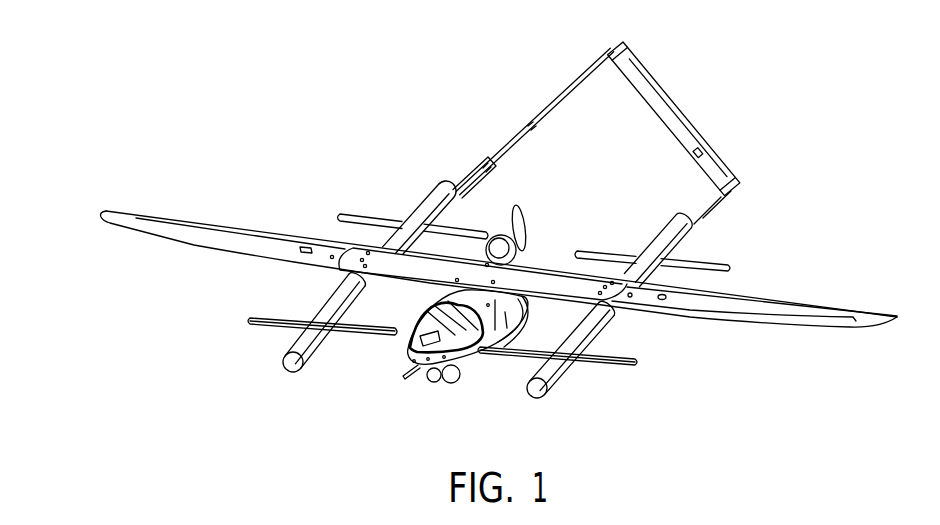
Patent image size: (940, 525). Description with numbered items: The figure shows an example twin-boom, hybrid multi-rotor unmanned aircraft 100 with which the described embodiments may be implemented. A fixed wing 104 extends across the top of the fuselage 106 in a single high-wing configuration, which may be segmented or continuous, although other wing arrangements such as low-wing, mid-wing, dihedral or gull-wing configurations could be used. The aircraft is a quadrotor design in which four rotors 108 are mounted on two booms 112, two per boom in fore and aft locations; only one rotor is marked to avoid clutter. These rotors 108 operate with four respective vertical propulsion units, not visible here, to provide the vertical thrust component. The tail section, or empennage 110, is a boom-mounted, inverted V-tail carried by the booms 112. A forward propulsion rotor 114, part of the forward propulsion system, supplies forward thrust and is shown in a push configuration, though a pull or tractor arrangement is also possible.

The aircraft 100 is at (760, 112).
The fixed wing 104 is at (872, 309).
The fuselage 106 is at (472, 360).
The rotors 108 is at (612, 364).
The empennage 110 is at (664, 94).
The booms 112 is at (430, 199).
The forward propulsion rotor 114 is at (528, 222).